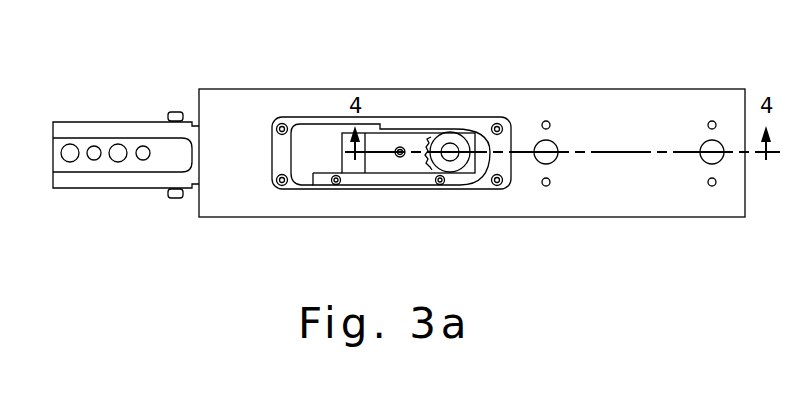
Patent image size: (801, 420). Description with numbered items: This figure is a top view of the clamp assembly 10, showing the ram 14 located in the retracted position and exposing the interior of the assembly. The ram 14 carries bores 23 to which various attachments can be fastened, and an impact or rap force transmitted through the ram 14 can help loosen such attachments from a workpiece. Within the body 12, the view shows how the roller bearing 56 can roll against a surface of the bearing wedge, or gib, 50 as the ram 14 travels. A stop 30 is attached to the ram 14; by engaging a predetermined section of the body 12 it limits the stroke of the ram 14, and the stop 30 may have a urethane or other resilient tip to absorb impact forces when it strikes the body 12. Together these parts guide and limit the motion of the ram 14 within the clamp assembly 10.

The clamp assembly 10 is at (120, 88).
The body 12 is at (628, 100).
The ram 14 is at (150, 122).
The bores 23 is at (143, 160).
The stop 30 is at (384, 143).
The bearing wedge 50 is at (326, 181).
The roller bearing 56 is at (452, 166).